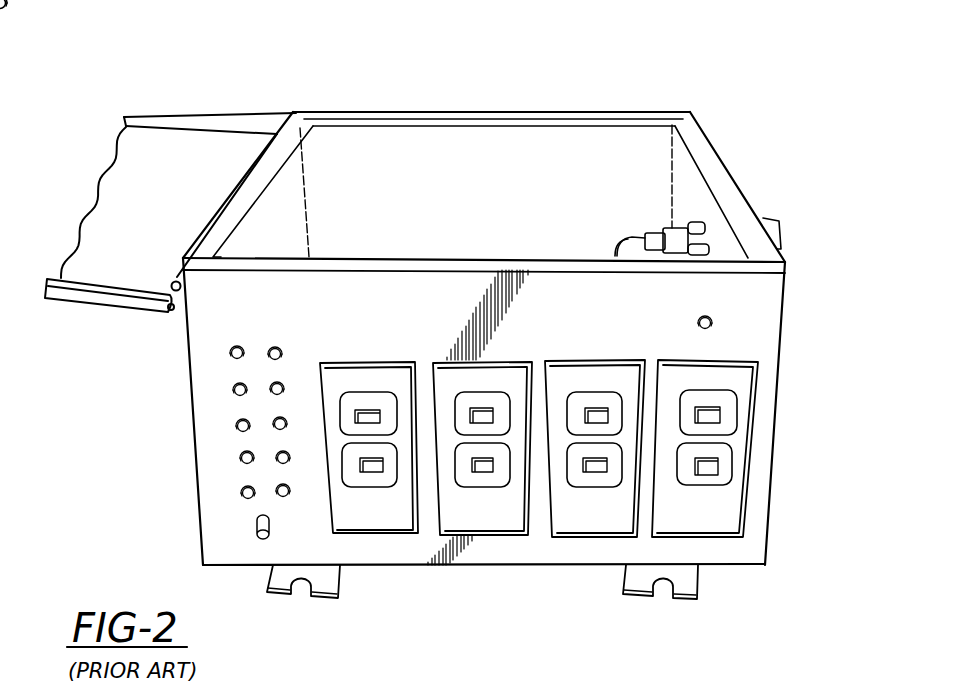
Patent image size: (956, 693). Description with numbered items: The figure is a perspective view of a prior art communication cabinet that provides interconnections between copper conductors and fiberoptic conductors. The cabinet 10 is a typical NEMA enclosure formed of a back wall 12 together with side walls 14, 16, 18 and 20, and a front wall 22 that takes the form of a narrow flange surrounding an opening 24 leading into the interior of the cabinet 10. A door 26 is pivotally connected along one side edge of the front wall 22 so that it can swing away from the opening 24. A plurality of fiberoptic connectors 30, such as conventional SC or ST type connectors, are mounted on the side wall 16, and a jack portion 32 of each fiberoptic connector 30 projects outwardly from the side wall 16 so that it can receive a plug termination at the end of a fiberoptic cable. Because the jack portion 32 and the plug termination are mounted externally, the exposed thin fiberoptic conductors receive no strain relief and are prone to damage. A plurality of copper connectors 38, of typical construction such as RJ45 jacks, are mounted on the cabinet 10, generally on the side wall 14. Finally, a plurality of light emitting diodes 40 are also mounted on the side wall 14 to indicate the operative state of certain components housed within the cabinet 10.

The cabinet 10 is at (742, 104).
The back wall 12 is at (392, 568).
The side wall 14 is at (743, 557).
The side wall 16 is at (780, 387).
The side wall 18 is at (647, 112).
The side wall 20 is at (187, 383).
The front wall 22 is at (538, 263).
The opening 24 is at (432, 124).
The door 26 is at (217, 147).
The fiberoptic connector 30 is at (692, 214).
The jack portion 32 is at (778, 233).
The copper connector 38 is at (573, 473).
The light emitting diode 40 is at (242, 433).